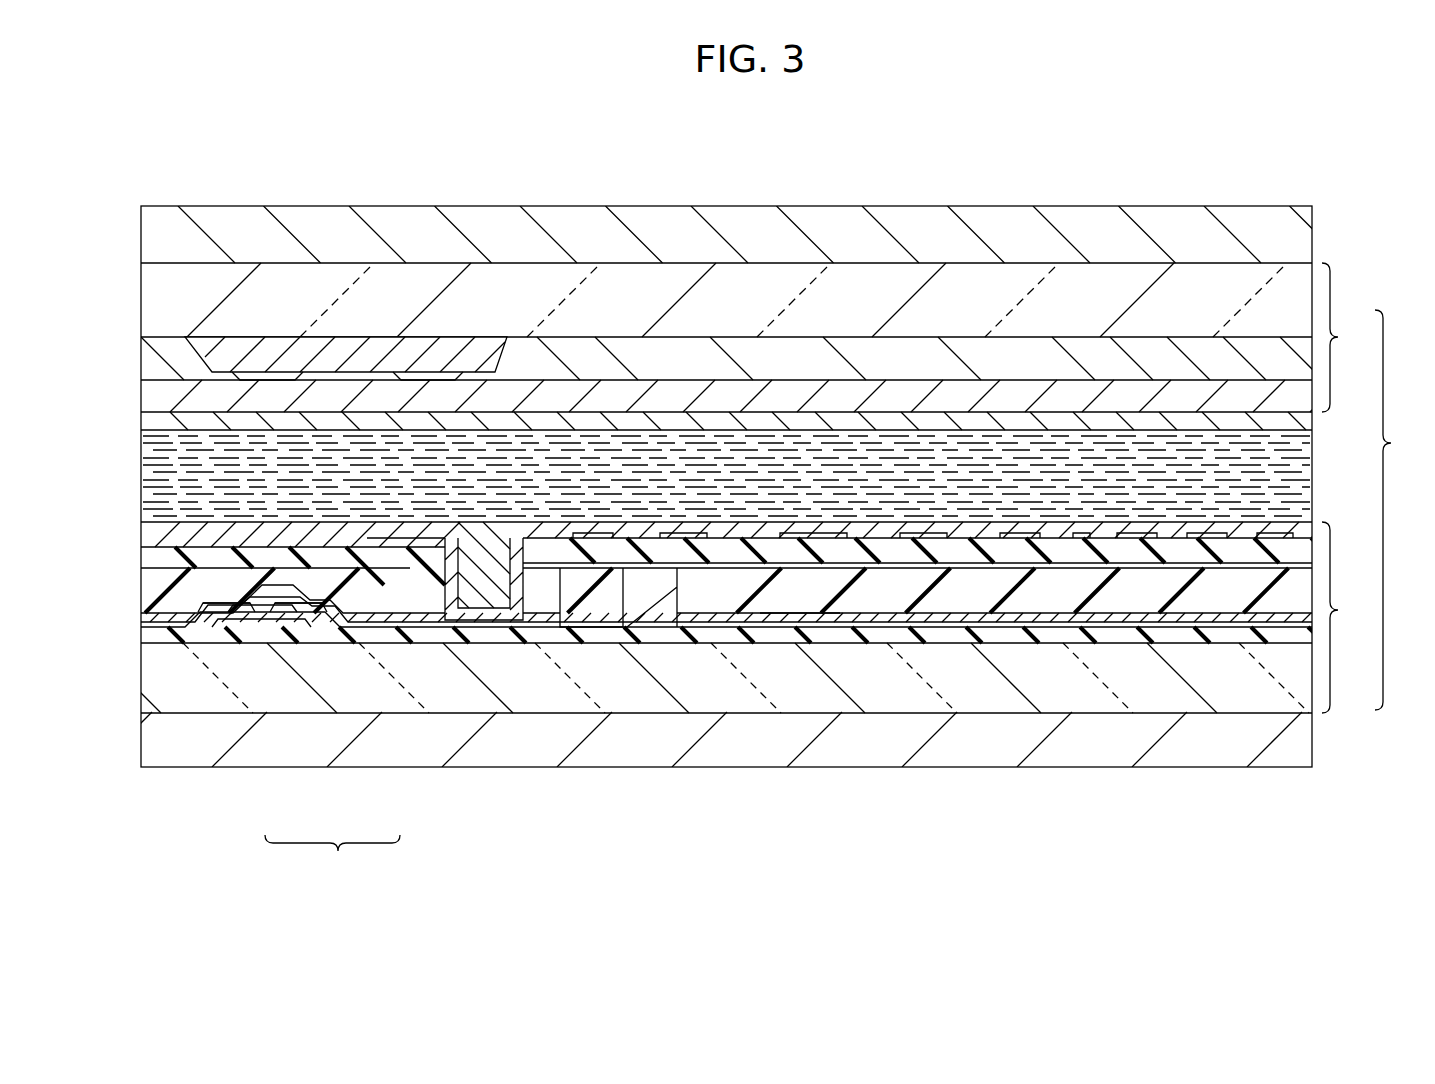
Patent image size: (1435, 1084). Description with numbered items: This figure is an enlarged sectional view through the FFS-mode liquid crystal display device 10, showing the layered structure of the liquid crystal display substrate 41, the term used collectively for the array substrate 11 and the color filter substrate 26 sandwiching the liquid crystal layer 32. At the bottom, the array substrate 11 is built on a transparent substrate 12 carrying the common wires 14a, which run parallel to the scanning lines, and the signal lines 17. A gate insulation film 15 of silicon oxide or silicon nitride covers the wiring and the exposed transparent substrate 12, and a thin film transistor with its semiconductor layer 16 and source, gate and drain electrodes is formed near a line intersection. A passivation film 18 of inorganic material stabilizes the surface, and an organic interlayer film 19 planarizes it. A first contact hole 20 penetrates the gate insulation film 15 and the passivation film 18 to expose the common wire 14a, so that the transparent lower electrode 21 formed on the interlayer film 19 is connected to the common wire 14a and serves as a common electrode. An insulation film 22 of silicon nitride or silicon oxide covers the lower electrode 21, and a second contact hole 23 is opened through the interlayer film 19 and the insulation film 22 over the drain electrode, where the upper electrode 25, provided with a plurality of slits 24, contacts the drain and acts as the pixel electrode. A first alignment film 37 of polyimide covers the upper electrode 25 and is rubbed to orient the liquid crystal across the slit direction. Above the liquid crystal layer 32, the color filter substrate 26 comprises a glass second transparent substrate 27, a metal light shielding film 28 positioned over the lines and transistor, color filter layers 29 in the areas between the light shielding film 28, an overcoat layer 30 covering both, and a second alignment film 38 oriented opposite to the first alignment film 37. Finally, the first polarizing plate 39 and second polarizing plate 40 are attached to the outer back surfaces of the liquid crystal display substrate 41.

The liquid crystal display device 10 is at (806, 121).
The array substrate 11 is at (1343, 617).
The transparent substrate 12 is at (1153, 680).
The common wire 14a is at (635, 628).
The gate insulation film 15 is at (483, 632).
The semiconductor layer 16 is at (238, 632).
The signal line 17 is at (190, 645).
The passivation film 18 is at (426, 625).
The interlayer film 19 is at (150, 585).
The first contact hole 20 is at (675, 590).
The lower electrode 21 is at (800, 612).
The insulation film 22 is at (150, 557).
The second contact hole 23 is at (515, 585).
The slit 24 is at (965, 530).
The upper electrode 25 is at (722, 620).
The color filter substrate 26 is at (752, 337).
The second transparent substrate 27 is at (895, 276).
The light shielding film 28 is at (358, 345).
The color filter layer 29 is at (1038, 348).
The overcoat layer 30 is at (1183, 392).
The liquid crystal layer 32 is at (150, 467).
The first alignment film 37 is at (150, 529).
The second alignment film 38 is at (150, 422).
The first polarizing plate 39 is at (1268, 762).
The second polarizing plate 40 is at (745, 222).
The liquid crystal display substrate 41 is at (1395, 510).